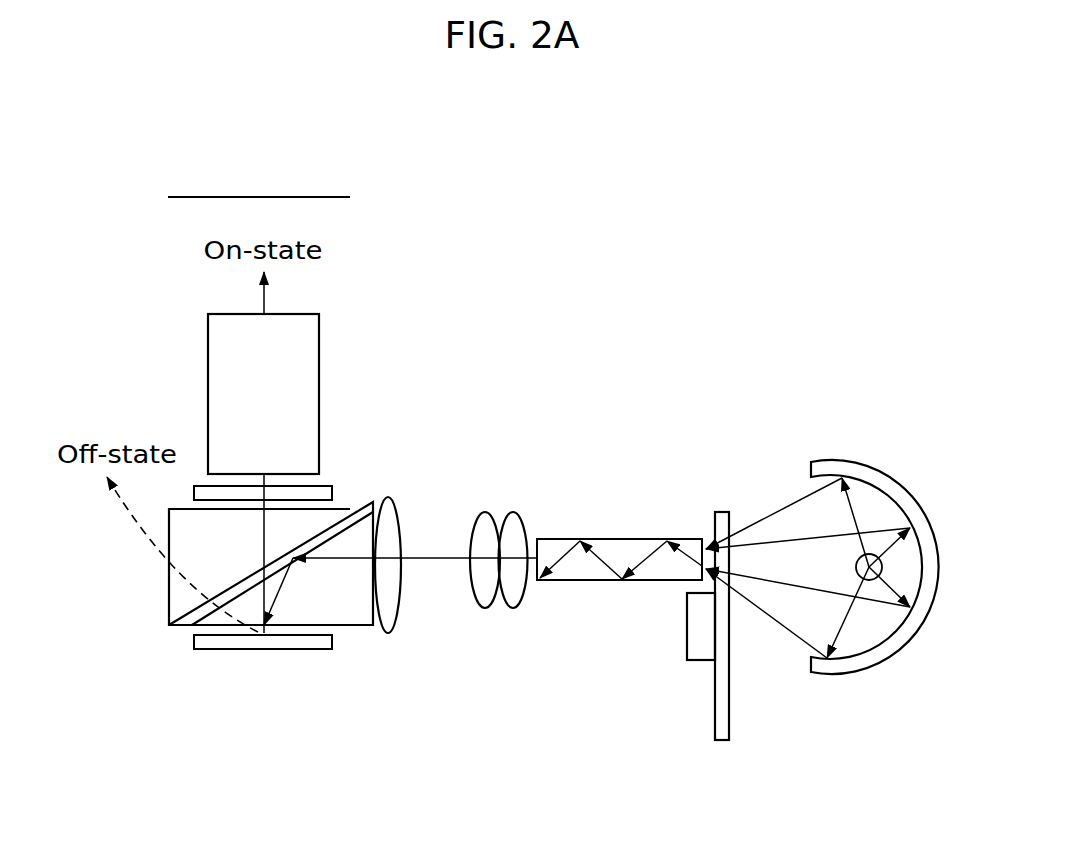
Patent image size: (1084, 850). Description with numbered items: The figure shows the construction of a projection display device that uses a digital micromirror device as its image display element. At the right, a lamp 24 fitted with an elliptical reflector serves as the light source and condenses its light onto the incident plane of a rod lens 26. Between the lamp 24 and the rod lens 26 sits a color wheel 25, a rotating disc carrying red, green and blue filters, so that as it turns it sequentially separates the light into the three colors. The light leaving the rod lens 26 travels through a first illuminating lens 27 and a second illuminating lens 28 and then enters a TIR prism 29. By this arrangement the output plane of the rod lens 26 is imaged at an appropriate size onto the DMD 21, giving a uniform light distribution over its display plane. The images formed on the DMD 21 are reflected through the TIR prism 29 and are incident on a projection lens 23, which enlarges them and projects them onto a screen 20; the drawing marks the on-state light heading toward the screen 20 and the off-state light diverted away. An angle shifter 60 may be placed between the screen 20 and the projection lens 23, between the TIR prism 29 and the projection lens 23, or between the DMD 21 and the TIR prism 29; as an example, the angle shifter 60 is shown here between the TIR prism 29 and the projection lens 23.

The screen 20 is at (259, 197).
The DMD 21 is at (254, 640).
The projection lens 23 is at (308, 368).
The lamp 24 is at (870, 655).
The color wheel 25 is at (723, 722).
The rod lens 26 is at (622, 545).
The first illuminating lens 27 is at (483, 518).
The second illuminating lens 28 is at (387, 497).
The TIR prism 29 is at (180, 603).
The angle shifter 60 is at (296, 493).